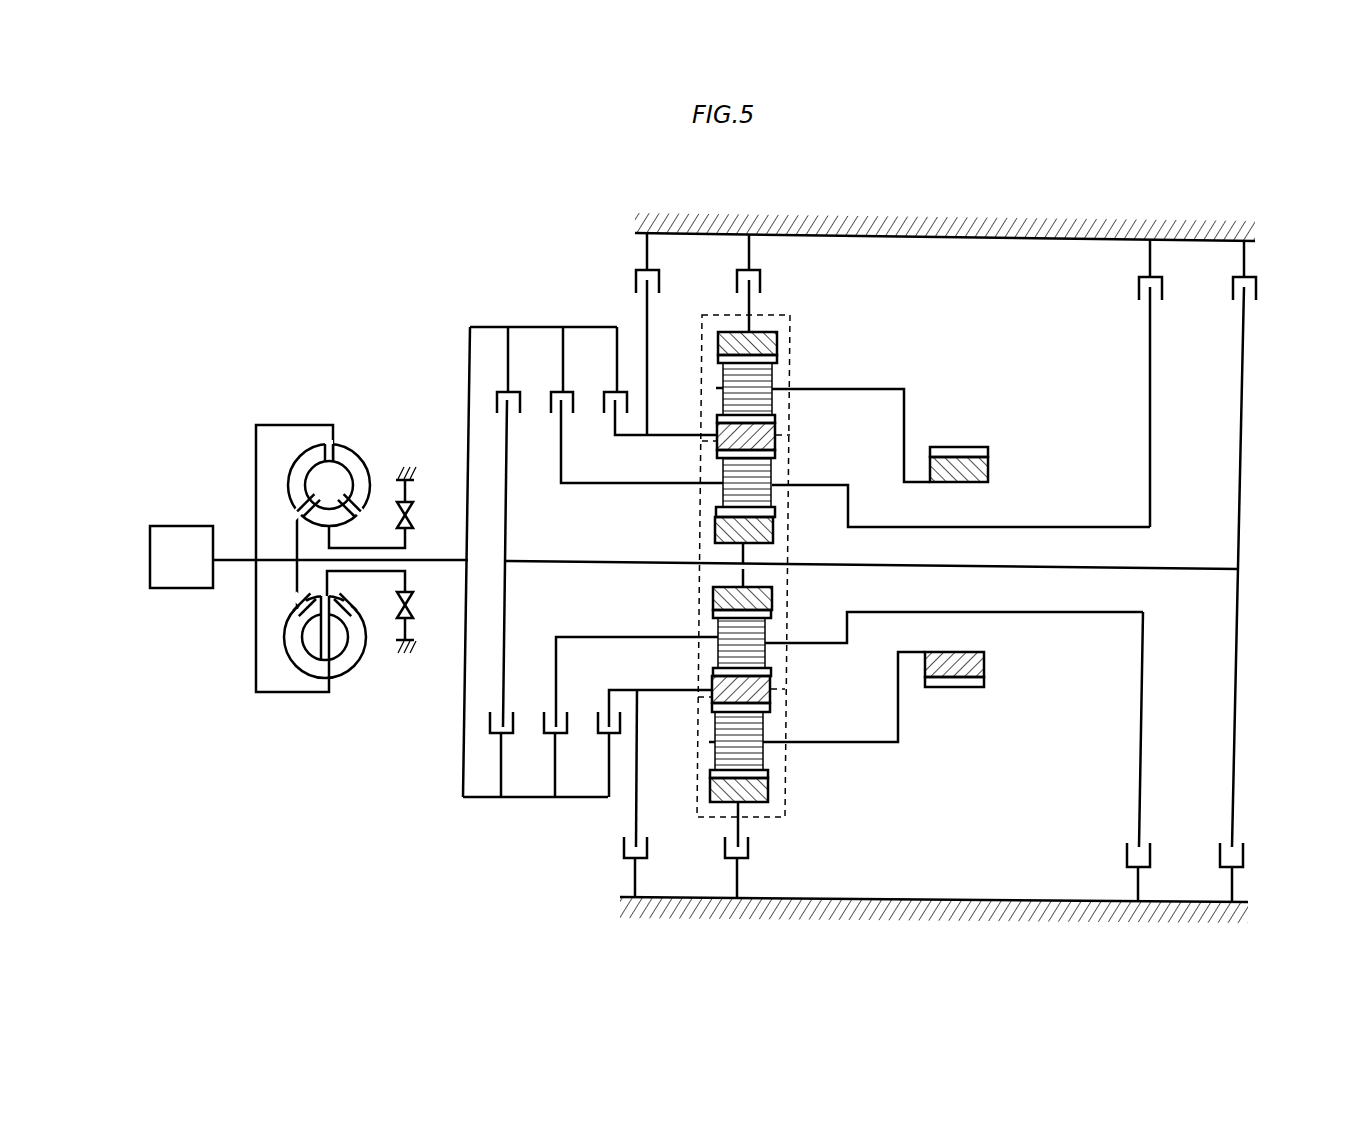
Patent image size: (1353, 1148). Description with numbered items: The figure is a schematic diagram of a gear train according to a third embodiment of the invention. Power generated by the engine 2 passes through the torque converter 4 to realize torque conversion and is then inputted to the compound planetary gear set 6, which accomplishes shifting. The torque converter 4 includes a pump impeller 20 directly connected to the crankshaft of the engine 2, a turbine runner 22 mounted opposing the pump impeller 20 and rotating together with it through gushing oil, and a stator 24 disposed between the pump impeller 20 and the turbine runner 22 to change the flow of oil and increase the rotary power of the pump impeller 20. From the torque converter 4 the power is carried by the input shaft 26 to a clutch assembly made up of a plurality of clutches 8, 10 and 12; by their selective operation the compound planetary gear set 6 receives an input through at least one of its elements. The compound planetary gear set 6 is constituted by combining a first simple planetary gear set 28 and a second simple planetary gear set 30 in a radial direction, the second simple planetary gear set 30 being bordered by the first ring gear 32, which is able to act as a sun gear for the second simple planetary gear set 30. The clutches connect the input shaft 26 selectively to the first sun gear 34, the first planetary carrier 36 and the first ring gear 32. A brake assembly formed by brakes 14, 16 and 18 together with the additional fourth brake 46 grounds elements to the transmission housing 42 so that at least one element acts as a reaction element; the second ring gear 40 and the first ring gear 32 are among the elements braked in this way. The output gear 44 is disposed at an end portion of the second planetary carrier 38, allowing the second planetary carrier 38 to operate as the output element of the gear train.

The engine 2 is at (183, 526).
The torque converter 4 is at (359, 424).
The compound planetary gear set 6 is at (791, 566).
The clutch 8 is at (497, 388).
The clutch 10 is at (552, 387).
The clutch 12 is at (604, 387).
The brake 14 is at (760, 271).
The brake 16 is at (1258, 277).
The brake 18 is at (1165, 278).
The pump impeller 20 is at (349, 451).
The turbine runner 22 is at (305, 460).
The stator 24 is at (339, 513).
The input shaft 26 is at (442, 559).
The first simple planetary gear set 28 is at (793, 459).
The second simple planetary gear set 30 is at (791, 404).
The first ring gear 32 is at (714, 432).
The first sun gear 34 is at (780, 540).
The first planetary carrier 36 is at (828, 488).
The second planetary carrier 38 is at (889, 388).
The second ring gear 40 is at (780, 344).
The transmission housing 42 is at (1152, 223).
The output gear 44 is at (957, 447).
The fourth brake 46 is at (658, 271).